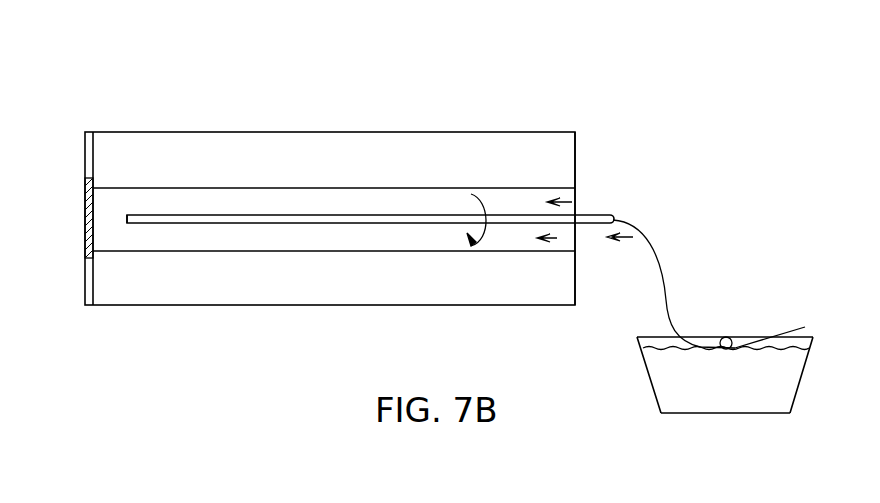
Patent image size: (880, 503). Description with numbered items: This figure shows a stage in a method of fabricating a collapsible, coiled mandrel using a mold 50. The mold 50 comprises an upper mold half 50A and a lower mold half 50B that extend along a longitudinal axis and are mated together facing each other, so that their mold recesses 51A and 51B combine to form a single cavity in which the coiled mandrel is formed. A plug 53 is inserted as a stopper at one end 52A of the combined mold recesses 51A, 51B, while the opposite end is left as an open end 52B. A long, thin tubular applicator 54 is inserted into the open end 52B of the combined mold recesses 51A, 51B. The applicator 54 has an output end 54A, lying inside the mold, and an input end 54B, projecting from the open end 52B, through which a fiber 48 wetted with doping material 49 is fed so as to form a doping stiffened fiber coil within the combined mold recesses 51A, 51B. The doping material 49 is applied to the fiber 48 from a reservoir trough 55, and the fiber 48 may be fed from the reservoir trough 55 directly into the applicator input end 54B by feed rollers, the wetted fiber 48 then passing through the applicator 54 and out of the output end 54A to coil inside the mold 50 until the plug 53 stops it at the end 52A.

The mold 50 is at (425, 68).
The upper mold half 50A is at (174, 131).
The lower mold half 50B is at (433, 305).
The mold recess 51A is at (572, 202).
The mold recess 51B is at (557, 238).
The end of the combined mold recesses 52A is at (70, 178).
The open end 52B is at (586, 172).
The plug 53 is at (83, 245).
The tubular applicator 54 is at (602, 204).
The output end 54A is at (127, 223).
The input end 54B is at (613, 213).
The fiber 48 is at (805, 327).
The doping material 49 is at (663, 399).
The reservoir trough 55 is at (690, 413).